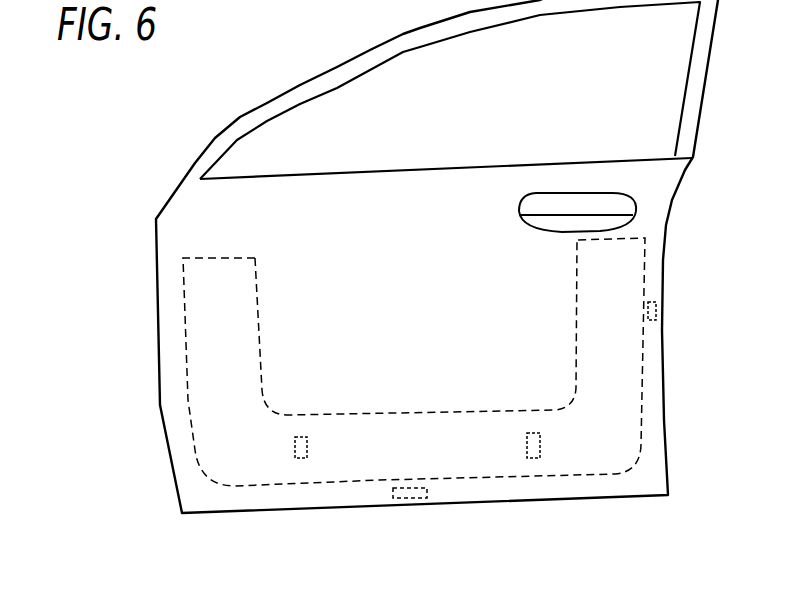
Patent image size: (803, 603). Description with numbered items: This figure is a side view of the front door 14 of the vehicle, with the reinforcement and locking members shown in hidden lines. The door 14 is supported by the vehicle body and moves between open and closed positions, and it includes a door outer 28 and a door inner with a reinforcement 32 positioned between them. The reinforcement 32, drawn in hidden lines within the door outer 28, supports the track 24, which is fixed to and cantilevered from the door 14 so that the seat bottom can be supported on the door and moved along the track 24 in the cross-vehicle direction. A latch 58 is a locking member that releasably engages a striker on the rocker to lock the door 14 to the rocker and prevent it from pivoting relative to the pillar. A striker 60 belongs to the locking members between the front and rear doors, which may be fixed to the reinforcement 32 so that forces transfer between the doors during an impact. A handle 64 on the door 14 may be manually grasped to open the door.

The front door 14 is at (160, 416).
The track 24 is at (297, 449).
The door outer 28 is at (408, 300).
The reinforcement 32 is at (183, 314).
The latch 58 is at (416, 499).
The striker 60 is at (658, 306).
The handle 64 is at (572, 203).